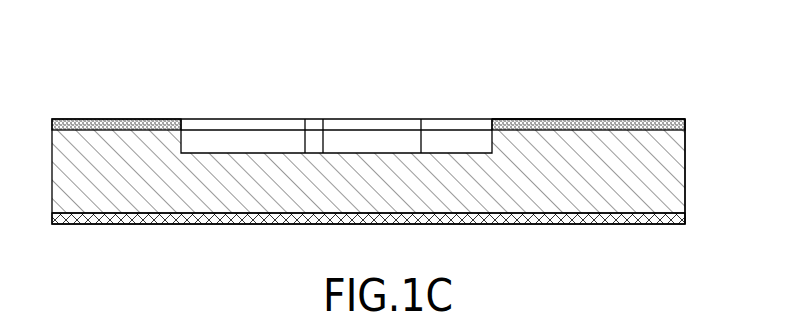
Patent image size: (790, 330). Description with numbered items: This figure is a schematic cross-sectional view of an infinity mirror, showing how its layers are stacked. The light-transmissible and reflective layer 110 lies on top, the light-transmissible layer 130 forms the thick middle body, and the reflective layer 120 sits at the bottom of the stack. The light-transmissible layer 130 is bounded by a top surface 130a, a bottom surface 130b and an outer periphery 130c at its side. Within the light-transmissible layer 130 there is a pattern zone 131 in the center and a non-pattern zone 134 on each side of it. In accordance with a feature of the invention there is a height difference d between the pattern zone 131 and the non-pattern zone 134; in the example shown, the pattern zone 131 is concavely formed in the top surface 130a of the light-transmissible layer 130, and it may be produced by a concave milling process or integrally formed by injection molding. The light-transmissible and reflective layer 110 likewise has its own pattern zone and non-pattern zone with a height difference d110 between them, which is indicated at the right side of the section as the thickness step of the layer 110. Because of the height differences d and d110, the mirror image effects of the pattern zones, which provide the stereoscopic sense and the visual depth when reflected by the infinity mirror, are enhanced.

The light-transmissible and reflective layer 110 is at (525, 119).
The reflective layer 120 is at (537, 218).
The light-transmissible layer 130 is at (667, 183).
The top surface 130a is at (595, 119).
The bottom surface 130b is at (590, 213).
The outer periphery 130c is at (687, 200).
The pattern zone 131 is at (492, 119).
The non-pattern zone 134 is at (685, 62).
The height difference d is at (52, 119).
The height difference d110 is at (707, 93).